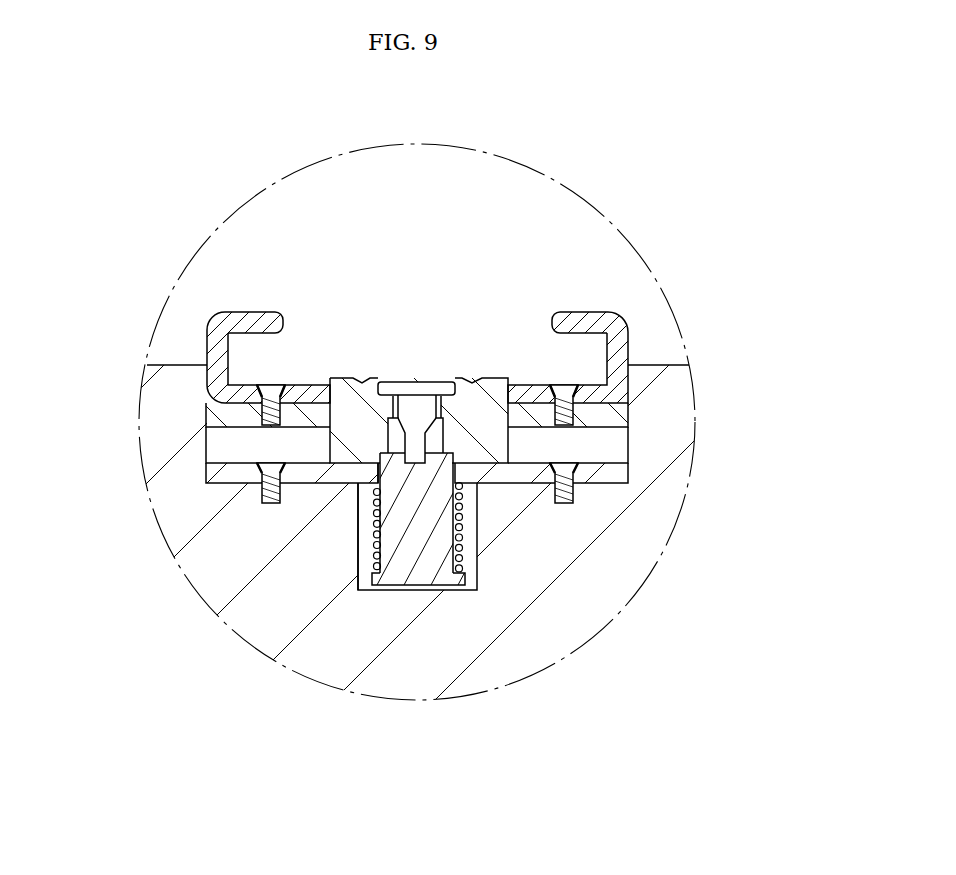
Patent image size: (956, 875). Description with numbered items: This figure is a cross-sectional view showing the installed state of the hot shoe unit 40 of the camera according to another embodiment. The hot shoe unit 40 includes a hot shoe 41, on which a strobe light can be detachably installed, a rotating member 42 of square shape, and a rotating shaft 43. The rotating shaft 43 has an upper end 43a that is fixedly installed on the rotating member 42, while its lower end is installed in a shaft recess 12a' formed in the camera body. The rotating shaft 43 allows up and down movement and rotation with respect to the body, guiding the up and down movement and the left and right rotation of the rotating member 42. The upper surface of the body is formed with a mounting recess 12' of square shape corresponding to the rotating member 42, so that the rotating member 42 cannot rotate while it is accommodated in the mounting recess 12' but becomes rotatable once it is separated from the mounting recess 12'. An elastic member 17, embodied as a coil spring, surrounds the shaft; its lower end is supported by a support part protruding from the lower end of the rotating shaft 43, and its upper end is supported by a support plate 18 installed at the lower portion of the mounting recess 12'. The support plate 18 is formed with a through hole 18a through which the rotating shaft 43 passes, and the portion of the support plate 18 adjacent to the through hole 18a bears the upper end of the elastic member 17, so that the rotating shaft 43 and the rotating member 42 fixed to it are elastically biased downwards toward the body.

The hot shoe unit 40 is at (662, 329).
The hot shoe 41 is at (587, 313).
The rotating member 42 is at (618, 415).
The support plate 18 is at (617, 473).
The through hole 18a is at (458, 493).
The elastic member 17 is at (458, 541).
The rotating shaft 43 is at (405, 565).
The upper end 43a is at (458, 581).
The mounting recess 12' is at (333, 443).
The shaft recess 12a' is at (273, 577).